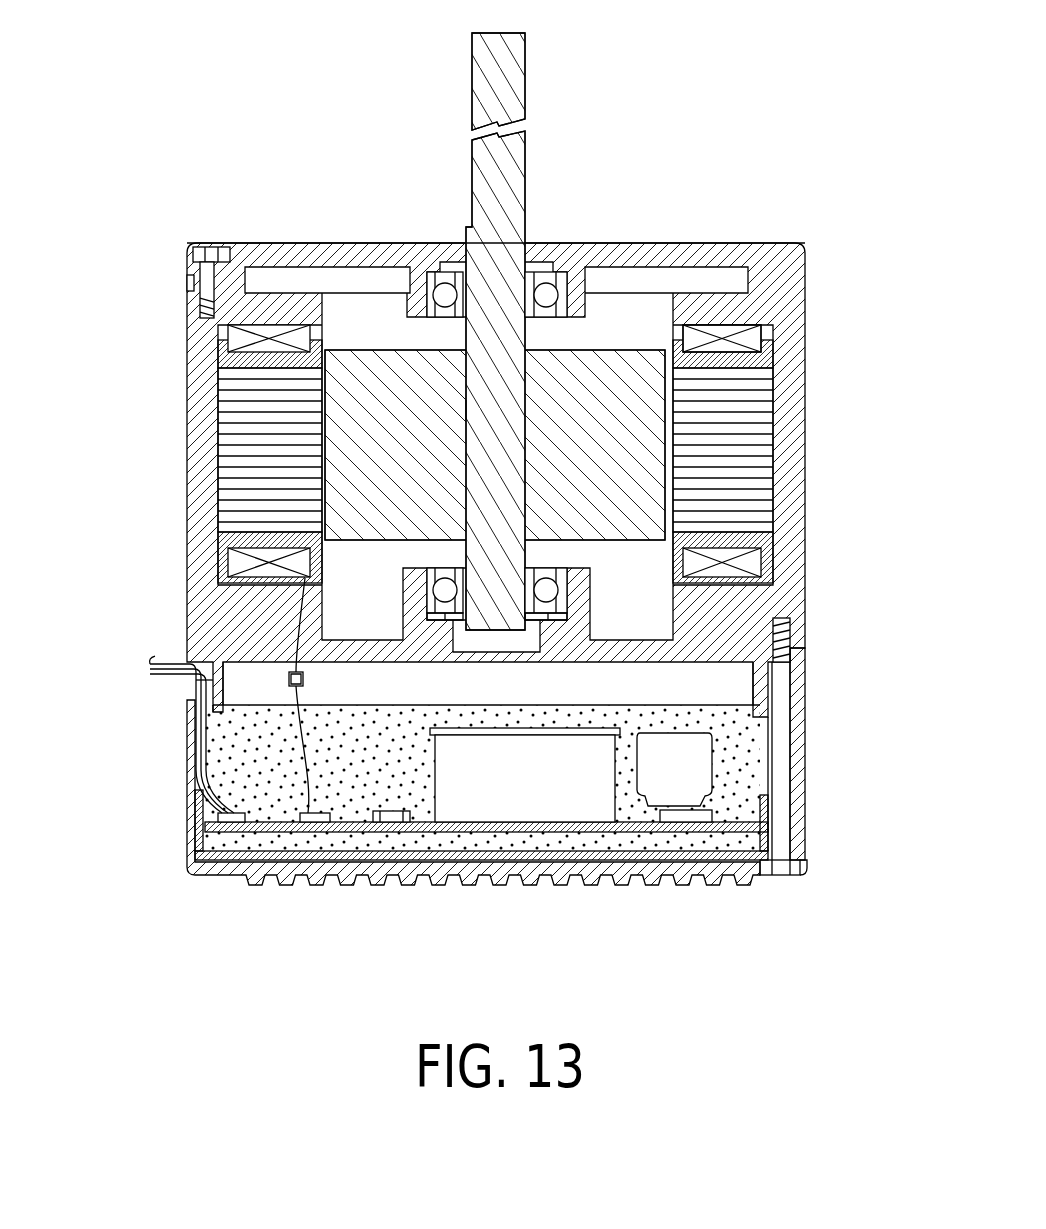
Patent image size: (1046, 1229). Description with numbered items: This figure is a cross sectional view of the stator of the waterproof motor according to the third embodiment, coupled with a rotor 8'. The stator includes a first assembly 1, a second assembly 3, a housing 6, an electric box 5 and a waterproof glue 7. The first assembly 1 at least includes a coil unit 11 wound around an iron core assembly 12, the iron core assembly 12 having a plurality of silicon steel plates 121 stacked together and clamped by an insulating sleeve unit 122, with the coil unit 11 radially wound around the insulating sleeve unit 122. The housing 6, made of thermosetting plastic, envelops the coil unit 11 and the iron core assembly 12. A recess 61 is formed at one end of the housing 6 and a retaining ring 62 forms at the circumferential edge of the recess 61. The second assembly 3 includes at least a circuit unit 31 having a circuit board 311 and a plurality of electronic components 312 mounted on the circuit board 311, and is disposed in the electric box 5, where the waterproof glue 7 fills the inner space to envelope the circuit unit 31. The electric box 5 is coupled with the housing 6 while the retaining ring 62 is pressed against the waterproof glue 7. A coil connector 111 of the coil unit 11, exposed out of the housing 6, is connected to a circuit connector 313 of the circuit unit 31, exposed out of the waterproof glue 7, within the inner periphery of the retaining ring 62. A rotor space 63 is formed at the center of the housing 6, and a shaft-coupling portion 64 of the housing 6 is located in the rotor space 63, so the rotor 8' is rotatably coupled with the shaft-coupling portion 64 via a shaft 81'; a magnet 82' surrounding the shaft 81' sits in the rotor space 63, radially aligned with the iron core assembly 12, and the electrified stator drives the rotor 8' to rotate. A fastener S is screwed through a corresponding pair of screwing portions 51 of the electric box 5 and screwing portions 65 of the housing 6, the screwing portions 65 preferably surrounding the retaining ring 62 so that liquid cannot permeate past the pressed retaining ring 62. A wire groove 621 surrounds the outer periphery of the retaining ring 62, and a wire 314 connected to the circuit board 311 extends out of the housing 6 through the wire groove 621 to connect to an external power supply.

The first assembly 1 is at (775, 308).
The second assembly 3 is at (621, 830).
The electric box 5 is at (196, 866).
The housing 6 is at (802, 497).
The waterproof glue 7 is at (748, 792).
The rotor 8' is at (559, 240).
The coil unit 11 is at (722, 325).
The iron core assembly 12 is at (588, 450).
The circuit unit 31 is at (465, 874).
The screwing portions 51 is at (795, 705).
The recess 61 is at (718, 690).
The retaining ring 62 is at (196, 683).
The rotor space 63 is at (632, 305).
The shaft-coupling portion 64 is at (583, 588).
The screwing portions 65 is at (795, 642).
The shaft 81' is at (451, 331).
The magnet 82' is at (480, 354).
The coil connector 111 is at (171, 611).
The silicon steel plates 121 is at (778, 402).
The insulating sleeve unit 122 is at (780, 356).
The circuit board 311 is at (263, 834).
The electronic components 312 is at (391, 885).
The circuit connector 313 is at (262, 670).
The wire 314 is at (207, 684).
The wire groove 621 is at (243, 712).
The fastener S is at (790, 870).